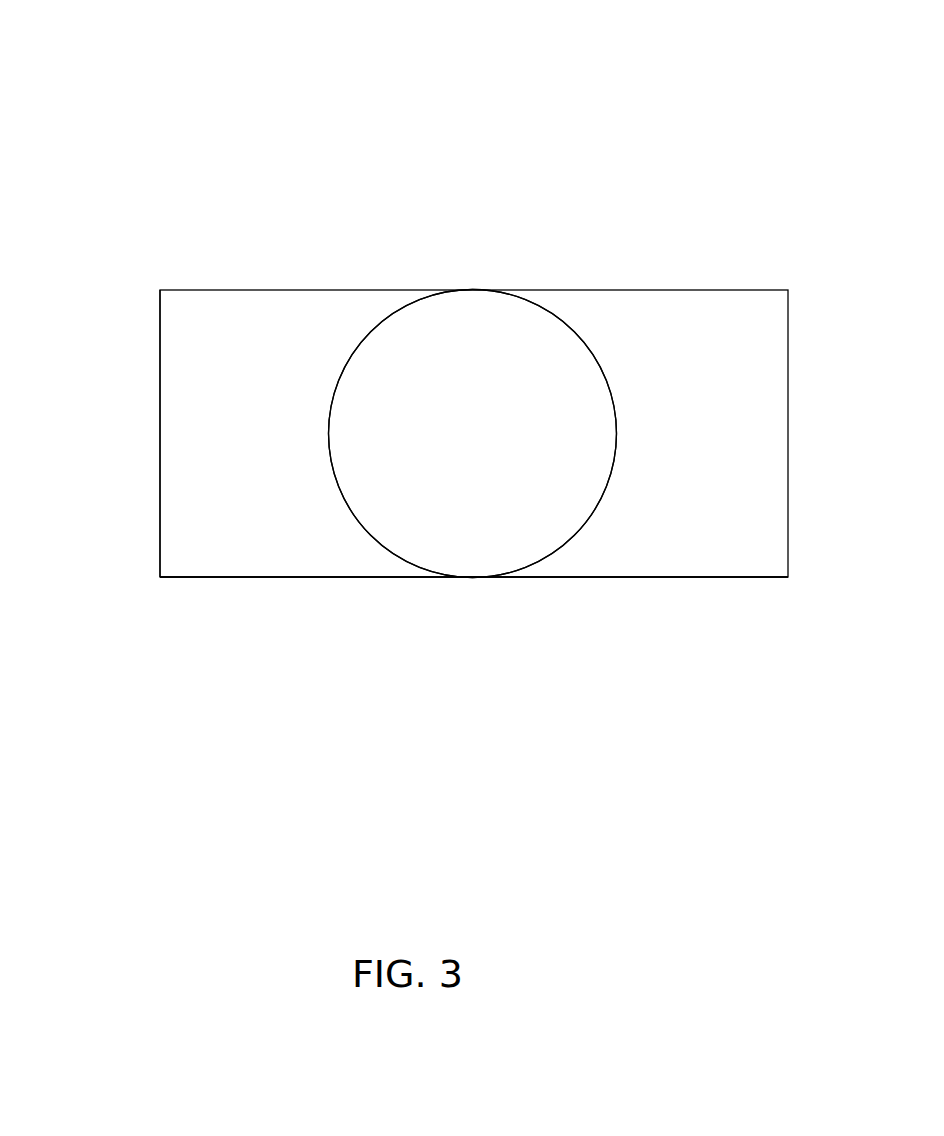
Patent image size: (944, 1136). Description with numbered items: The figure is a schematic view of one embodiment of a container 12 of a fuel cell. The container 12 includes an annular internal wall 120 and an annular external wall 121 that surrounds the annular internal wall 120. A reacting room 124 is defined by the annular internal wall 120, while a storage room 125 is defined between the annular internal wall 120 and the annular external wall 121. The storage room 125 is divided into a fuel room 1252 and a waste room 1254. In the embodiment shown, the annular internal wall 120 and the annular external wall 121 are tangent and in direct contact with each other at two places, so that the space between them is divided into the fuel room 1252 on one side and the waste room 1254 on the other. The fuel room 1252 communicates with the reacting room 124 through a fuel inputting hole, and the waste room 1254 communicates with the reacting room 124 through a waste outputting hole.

The container 12 is at (486, 85).
The annular external wall 121 is at (160, 435).
The reacting room 124 is at (500, 350).
The annular internal wall 120 is at (336, 479).
The fuel room 1252 is at (320, 542).
The waste room 1254 is at (647, 527).
The storage room 125 is at (717, 663).